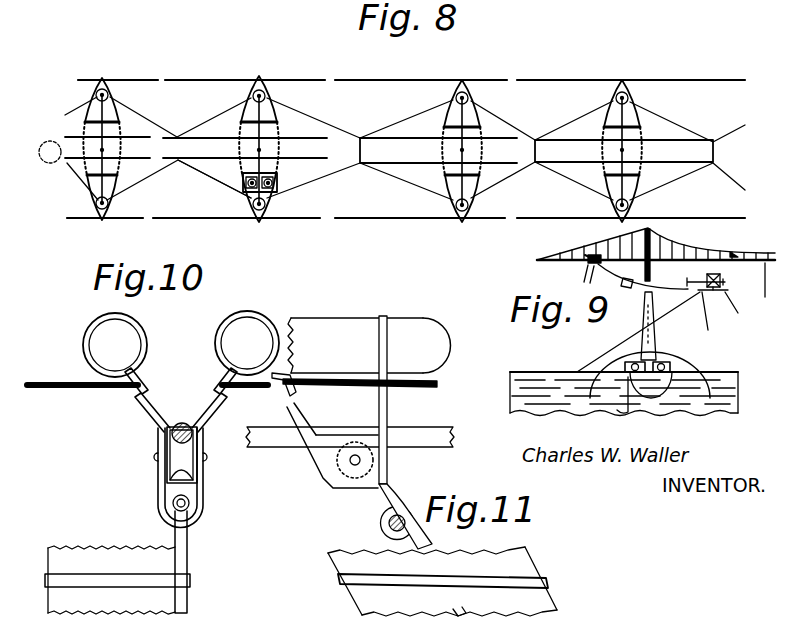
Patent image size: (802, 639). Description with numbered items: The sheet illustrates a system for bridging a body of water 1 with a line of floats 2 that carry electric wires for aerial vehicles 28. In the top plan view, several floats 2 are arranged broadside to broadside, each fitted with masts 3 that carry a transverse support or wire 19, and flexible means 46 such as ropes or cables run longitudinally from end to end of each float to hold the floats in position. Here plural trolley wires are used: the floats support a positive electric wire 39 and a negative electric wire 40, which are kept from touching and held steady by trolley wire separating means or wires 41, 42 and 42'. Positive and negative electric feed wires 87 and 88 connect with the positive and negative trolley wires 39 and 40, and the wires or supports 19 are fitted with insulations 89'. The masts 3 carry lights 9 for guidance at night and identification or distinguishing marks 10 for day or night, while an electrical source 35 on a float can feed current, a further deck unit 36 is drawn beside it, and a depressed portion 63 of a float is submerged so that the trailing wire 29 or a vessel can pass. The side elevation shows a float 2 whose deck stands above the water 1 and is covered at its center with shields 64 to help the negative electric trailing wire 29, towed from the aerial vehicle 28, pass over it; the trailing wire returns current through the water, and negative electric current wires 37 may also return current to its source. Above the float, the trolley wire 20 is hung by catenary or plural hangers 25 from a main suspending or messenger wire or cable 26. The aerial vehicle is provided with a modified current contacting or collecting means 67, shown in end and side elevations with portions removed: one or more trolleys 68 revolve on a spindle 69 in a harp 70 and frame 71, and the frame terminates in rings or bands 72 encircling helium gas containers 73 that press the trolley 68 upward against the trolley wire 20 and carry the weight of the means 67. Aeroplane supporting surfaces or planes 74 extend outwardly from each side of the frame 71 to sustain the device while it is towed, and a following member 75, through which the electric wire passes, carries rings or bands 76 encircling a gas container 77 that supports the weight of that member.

In FIG. 8, the body of water 1 is at (574, 116).
In FIG. 9, the body of water 1 is at (527, 372).
In FIG. 8, the floats 2 is at (455, 90).
In FIG. 9, the floats 2 is at (589, 358).
In FIG. 8, the masts 3 is at (252, 97).
In FIG. 9, the masts 3 is at (660, 344).
In FIG. 8, the lights 9 is at (272, 94).
In FIG. 8, the identification or distinguishing marks 10 is at (457, 218).
In FIG. 8, the transverse support or wire 19 is at (260, 131).
In FIG. 9, the longitudinally extending electric wire 20 is at (767, 292).
In FIG. 10, the longitudinally extending electric wire 20 is at (182, 422).
In FIG. 11, the longitudinally extending electric wire 20 is at (281, 438).
In FIG. 9, the catenary or plural hangers 25 is at (733, 256).
In FIG. 9, the main suspending or messenger wire or cable 26 is at (620, 246).
In FIG. 9, the aerial vehicles 28 is at (727, 315).
In FIG. 9, the negative electric trailing wire 29 is at (708, 314).
In FIG. 8, the electrical source 35 is at (245, 178).
In FIG. 9, the electrical source 35 is at (624, 364).
In FIG. 8, the winch drum 36 is at (278, 178).
In FIG. 9, the winch drum 36 is at (673, 360).
In FIG. 9, the negative electric current wires 37 is at (636, 404).
In FIG. 8, the positive electric wire 39 is at (403, 138).
In FIG. 8, the negative electric wire 40 is at (404, 163).
In FIG. 8, the trolley wire separating means or wires 41 is at (212, 178).
In FIG. 8, the trolley wire separating means or wires 42 is at (211, 112).
In FIG. 8, the trolley wire separating means or wires 42' is at (624, 152).
In FIG. 8, the flexible means 46 is at (212, 77).
In FIG. 8, the depressed portion 63 is at (84, 147).
In FIG. 9, the shields 64 is at (698, 367).
In FIG. 10, the current contacting or collecting means 67 is at (195, 478).
In FIG. 11, the current contacting or collecting means 67 is at (332, 440).
In FIG. 10, the trolleys 68 is at (183, 455).
In FIG. 11, the trolleys 68 is at (357, 433).
In FIG. 10, the spindle 69 is at (160, 458).
In FIG. 11, the spindle 69 is at (352, 464).
In FIG. 9, the harp 70 is at (638, 255).
In FIG. 10, the harp 70 is at (170, 496).
In FIG. 11, the harp 70 is at (380, 498).
In FIG. 9, the frame 71 is at (597, 267).
In FIG. 10, the frame 71 is at (148, 408).
In FIG. 11, the frame 71 is at (389, 414).
In FIG. 10, the rings or bands 72 is at (86, 331).
In FIG. 11, the rings or bands 72 is at (388, 342).
In FIG. 9, the gas containers 73 is at (590, 256).
In FIG. 10, the gas containers 73 is at (181, 344).
In FIG. 11, the gas containers 73 is at (355, 345).
In FIG. 9, the aeroplane supporting surfaces or planes 74 is at (592, 263).
In FIG. 10, the aeroplane supporting surfaces or planes 74 is at (70, 392).
In FIG. 11, the aeroplane supporting surfaces or planes 74 is at (315, 378).
In FIG. 9, the following member 75 is at (635, 326).
In FIG. 10, the following member 75 is at (189, 558).
In FIG. 11, the following member 75 is at (420, 538).
In FIG. 10, the rings or bands 76 is at (190, 583).
In FIG. 11, the rings or bands 76 is at (339, 578).
In FIG. 9, the gas container 77 is at (631, 286).
In FIG. 10, the gas container 77 is at (82, 562).
In FIG. 11, the gas container 77 is at (366, 563).
In FIG. 8, the positive electric feed wire 87 is at (470, 132).
In FIG. 8, the negative electric feed wire 88 is at (470, 173).
In FIG. 8, the insulations 89' is at (645, 151).